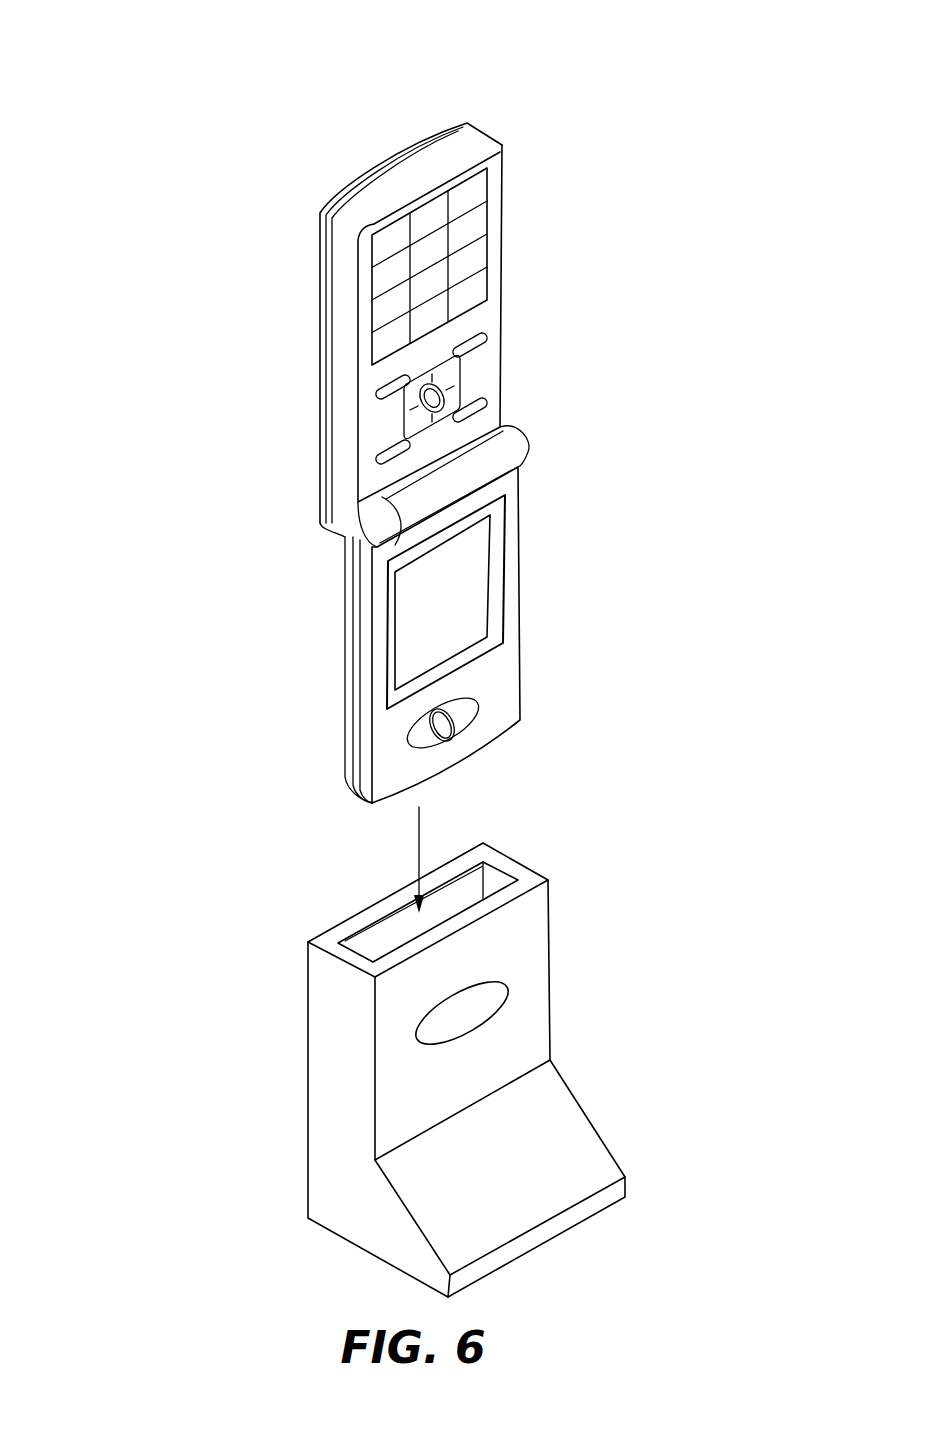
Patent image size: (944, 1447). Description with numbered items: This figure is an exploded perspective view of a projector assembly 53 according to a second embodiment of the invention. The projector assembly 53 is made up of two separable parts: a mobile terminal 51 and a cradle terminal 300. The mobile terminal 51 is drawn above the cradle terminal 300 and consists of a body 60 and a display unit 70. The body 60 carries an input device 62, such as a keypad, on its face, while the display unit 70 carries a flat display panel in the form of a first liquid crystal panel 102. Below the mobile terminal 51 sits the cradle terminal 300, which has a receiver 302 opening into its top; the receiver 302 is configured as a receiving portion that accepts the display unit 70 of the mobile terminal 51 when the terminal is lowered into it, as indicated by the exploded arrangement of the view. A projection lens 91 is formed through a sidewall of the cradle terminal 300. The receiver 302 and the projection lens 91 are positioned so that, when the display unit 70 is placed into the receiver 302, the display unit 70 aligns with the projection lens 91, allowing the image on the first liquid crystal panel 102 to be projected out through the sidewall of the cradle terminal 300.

The projector assembly 53 is at (182, 612).
The mobile terminal 51 is at (577, 274).
The body 60 is at (353, 127).
The input device 62 is at (468, 193).
The display unit 70 is at (567, 594).
The first liquid crystal panel 102 is at (470, 560).
The cradle terminal 300 is at (605, 926).
The receiver 302 is at (378, 940).
The projection lens 91 is at (477, 1007).